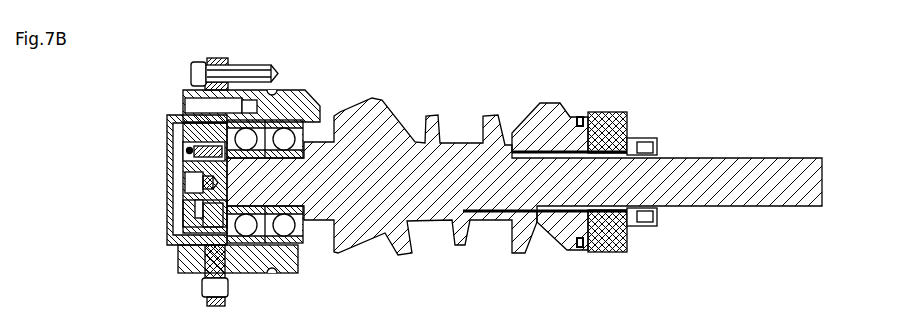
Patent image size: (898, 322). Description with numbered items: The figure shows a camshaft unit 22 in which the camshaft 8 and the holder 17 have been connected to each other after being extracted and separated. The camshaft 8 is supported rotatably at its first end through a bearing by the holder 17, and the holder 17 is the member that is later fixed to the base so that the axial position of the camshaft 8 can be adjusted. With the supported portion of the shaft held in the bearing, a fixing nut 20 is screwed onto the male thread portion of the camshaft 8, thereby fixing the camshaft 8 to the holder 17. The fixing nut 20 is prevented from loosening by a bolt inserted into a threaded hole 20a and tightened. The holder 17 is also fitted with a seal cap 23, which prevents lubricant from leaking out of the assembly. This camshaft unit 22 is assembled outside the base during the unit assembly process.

The camshaft 8 is at (666, 102).
The holder 17 is at (283, 44).
The fixing nut 20 is at (180, 223).
The threaded hole 20a is at (183, 150).
The camshaft unit 22 is at (847, 84).
The seal cap 23 is at (170, 187).